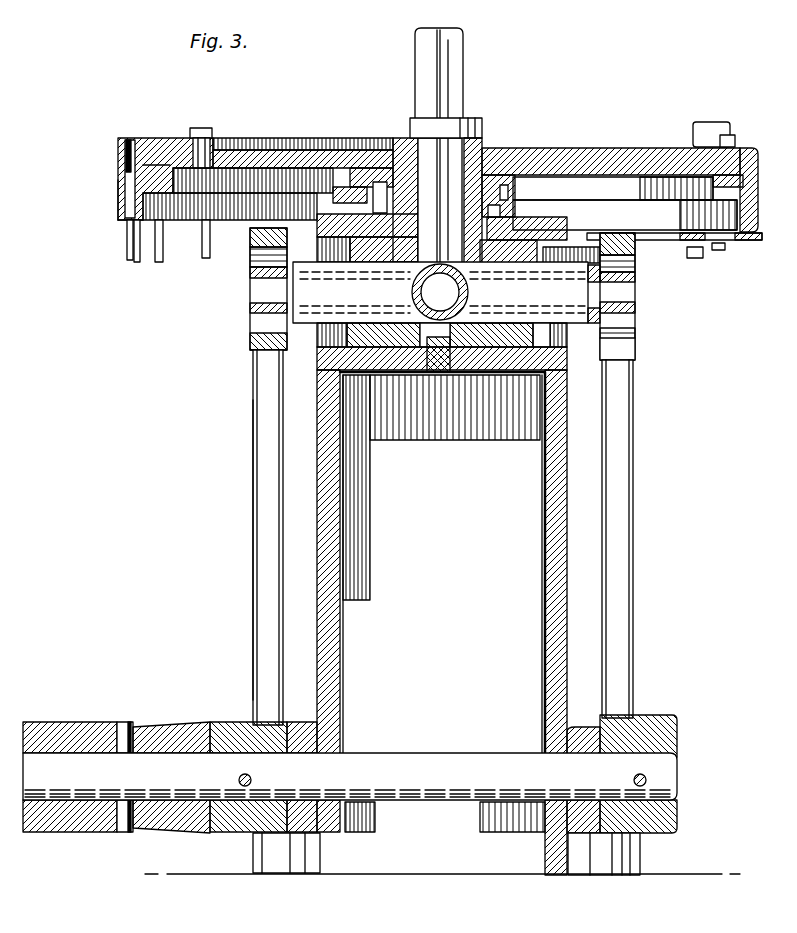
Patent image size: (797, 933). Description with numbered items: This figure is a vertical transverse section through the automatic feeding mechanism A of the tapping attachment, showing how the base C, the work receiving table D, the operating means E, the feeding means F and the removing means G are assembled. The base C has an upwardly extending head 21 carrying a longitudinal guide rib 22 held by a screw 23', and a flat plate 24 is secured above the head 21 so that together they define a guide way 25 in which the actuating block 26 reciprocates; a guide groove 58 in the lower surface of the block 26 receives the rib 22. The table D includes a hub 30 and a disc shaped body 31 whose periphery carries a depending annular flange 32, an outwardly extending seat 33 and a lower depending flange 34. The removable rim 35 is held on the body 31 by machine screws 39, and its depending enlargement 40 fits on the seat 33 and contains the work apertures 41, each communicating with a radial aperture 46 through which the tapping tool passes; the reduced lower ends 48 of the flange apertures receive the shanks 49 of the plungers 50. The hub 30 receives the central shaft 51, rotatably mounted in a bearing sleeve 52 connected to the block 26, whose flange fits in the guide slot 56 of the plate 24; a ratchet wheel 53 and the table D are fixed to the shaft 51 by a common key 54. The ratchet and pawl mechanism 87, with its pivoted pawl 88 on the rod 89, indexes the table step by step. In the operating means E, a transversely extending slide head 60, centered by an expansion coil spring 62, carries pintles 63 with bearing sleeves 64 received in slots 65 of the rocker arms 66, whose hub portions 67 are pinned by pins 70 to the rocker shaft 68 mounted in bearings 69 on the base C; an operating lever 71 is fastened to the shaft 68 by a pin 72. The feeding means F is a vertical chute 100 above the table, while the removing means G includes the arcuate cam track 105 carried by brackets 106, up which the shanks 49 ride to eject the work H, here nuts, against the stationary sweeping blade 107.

The head 21 is at (550, 360).
The guide rib 22 is at (443, 372).
The screw 23' is at (442, 565).
The flat plate 24 is at (565, 200).
The guide way 25 is at (330, 345).
The actuating block 26 is at (335, 337).
The hub 30 is at (485, 143).
The disc shaped body 31 is at (287, 138).
The depending annular flange 32 is at (173, 227).
The outwardly extending seat 33 is at (118, 183).
The depending flange 34 is at (118, 203).
The rim 35 is at (155, 138).
The machine screws 39 is at (207, 128).
The depending enlargement 40 is at (160, 173).
The apertures 41 is at (133, 140).
The radially extending aperture 46 is at (122, 150).
The reduced lower ends 48 is at (125, 220).
The shanks 49 is at (133, 262).
The plungers 50 is at (153, 233).
The shaft 51 is at (467, 117).
The bearing sleeve 52 is at (518, 172).
The ratchet wheel 53 is at (398, 150).
The key 54 is at (483, 138).
The guide slot 56 is at (548, 220).
The guide groove 58 is at (452, 367).
The slide head 60 is at (557, 300).
The expansion coil spring 62 is at (417, 290).
The pintles 63 is at (262, 285).
The bearing sleeves 64 is at (252, 307).
The slots 65 is at (263, 323).
The rocker arms 66 is at (263, 510).
The hub portions 67 is at (250, 730).
The rocker shaft 68 is at (585, 740).
The bearings 69 is at (595, 747).
The pins 70 is at (247, 787).
The operating lever 71 is at (77, 813).
The pin 72 is at (128, 827).
The ratchet and pawl mechanism 87 is at (352, 175).
The pivoted pawl 88 is at (373, 180).
The rod 89 is at (337, 173).
The chute 100 is at (455, 63).
The cam track 105 is at (745, 238).
The brackets 106 is at (640, 240).
The sweeping blade 107 is at (703, 127).
The automatic feeding mechanism A is at (527, 533).
The base C is at (350, 590).
The work receiving table D is at (525, 198).
The operating means E is at (257, 490).
The work feeding means F is at (437, 52).
The work removing means G is at (717, 242).
The work H is at (725, 140).